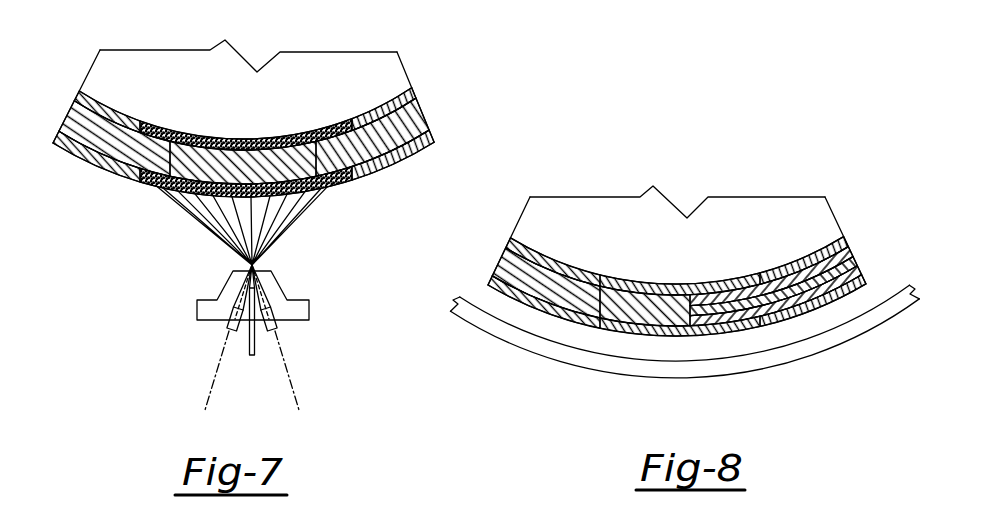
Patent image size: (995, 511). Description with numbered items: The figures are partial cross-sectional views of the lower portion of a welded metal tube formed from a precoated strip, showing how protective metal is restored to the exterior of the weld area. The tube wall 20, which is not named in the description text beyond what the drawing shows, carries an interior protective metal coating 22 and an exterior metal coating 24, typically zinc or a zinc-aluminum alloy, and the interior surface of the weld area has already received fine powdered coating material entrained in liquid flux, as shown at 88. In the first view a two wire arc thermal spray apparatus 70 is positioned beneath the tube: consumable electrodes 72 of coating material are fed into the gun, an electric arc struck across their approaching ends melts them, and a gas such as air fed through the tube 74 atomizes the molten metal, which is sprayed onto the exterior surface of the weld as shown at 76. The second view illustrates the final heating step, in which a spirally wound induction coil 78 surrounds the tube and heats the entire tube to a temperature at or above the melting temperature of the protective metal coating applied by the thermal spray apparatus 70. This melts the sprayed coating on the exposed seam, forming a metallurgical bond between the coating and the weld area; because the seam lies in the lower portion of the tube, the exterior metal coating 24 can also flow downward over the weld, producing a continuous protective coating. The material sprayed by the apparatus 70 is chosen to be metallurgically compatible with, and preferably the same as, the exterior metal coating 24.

In FIG. 7, the outer cover layer 20 is at (427, 128).
In FIG. 8, the outer cover layer 20 is at (521, 270).
In FIG. 7, the interior protective metal coating 22 is at (137, 118).
In FIG. 8, the interior protective metal coating 22 is at (710, 277).
In FIG. 7, the exterior metal coating 24 is at (100, 168).
In FIG. 8, the exterior metal coating 24 is at (866, 282).
In FIG. 7, the powdered coating material and flux 88 is at (279, 130).
In FIG. 7, the thermal spray apparatus 70 is at (190, 309).
In FIG. 7, the consumable electrodes 72 is at (227, 325).
In FIG. 7, the tube 74 is at (249, 358).
In FIG. 7, the sprayed coating material 76 is at (277, 228).
In FIG. 8, the spirally wound induction coil 78 is at (568, 362).